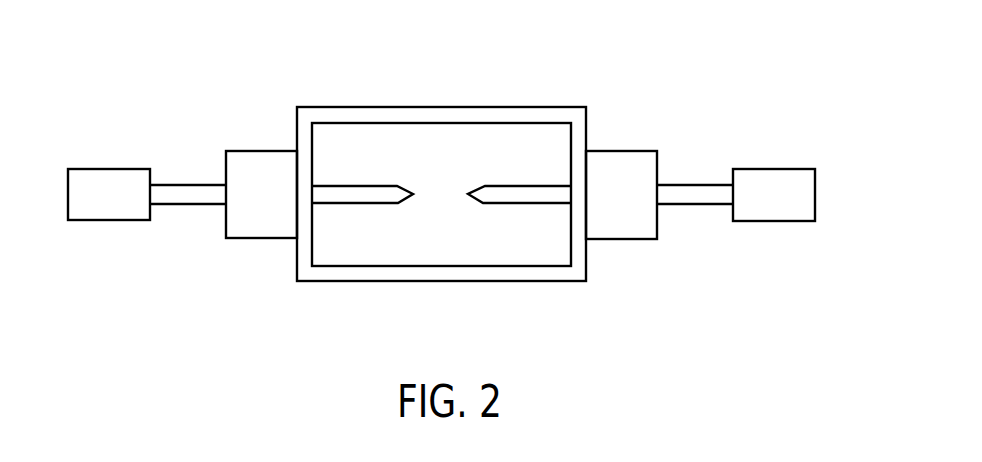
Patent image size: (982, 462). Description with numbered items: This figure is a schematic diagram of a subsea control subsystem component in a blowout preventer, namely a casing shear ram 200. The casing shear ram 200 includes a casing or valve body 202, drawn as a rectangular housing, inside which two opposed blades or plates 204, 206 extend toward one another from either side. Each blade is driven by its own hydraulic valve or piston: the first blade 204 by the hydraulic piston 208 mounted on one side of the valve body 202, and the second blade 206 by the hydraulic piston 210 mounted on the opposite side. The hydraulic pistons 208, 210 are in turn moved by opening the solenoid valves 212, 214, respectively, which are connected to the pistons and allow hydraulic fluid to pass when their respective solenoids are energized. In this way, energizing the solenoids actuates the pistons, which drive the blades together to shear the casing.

The casing shear ram 200 is at (468, 58).
The valve body 202 is at (577, 107).
The blade 204 is at (345, 186).
The blade 206 is at (510, 203).
The hydraulic piston 208 is at (263, 151).
The hydraulic piston 210 is at (645, 151).
The solenoid valve 212 is at (92, 169).
The solenoid valve 214 is at (800, 169).